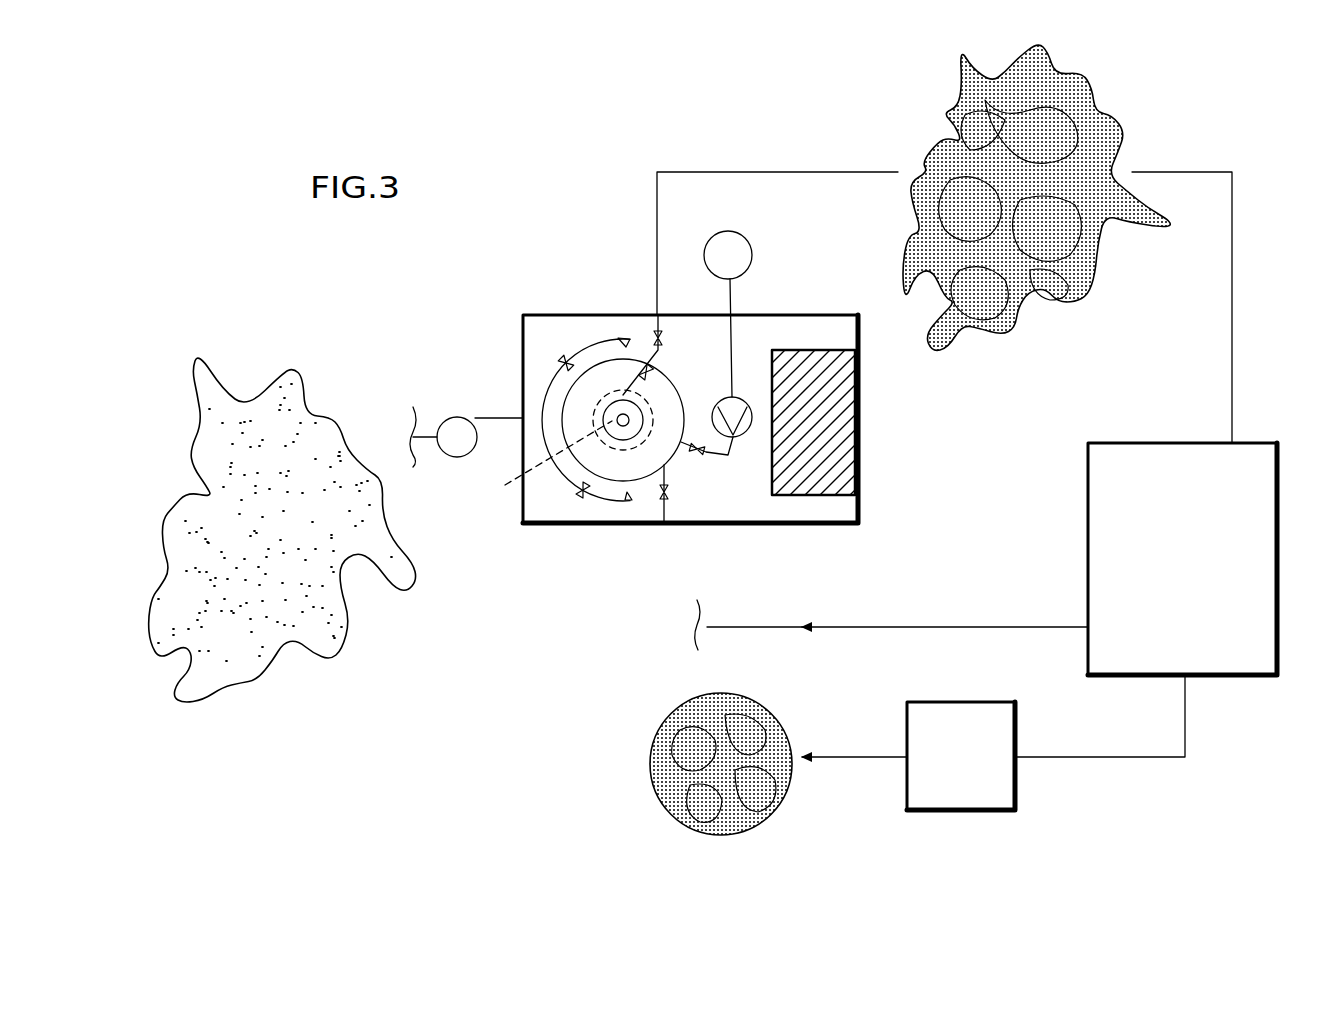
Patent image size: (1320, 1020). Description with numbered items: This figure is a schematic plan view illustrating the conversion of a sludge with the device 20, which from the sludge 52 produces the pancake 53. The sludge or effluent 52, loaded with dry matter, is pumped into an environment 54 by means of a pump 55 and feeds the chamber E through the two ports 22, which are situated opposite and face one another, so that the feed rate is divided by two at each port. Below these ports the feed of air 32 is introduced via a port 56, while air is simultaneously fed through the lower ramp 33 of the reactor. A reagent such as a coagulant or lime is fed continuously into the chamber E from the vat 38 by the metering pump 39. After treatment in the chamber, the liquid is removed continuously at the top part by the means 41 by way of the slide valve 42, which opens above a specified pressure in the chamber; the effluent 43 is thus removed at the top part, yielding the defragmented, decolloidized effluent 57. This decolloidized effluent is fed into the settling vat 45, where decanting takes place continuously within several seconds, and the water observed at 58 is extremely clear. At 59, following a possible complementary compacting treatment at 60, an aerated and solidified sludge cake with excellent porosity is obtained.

The device 20 is at (797, 152).
The ports 22 is at (606, 337).
The feed of air 32 is at (667, 527).
The lower ramp 33 is at (544, 460).
The vat 38 is at (752, 262).
The metering pump 39 is at (740, 397).
The means for removing liquid 41 is at (672, 360).
The slide valve 42 is at (655, 387).
The effluent 43 is at (688, 172).
The settling vat 45 is at (1088, 497).
The sludge 52 is at (268, 627).
The pancake 53 is at (755, 828).
The environment 54 is at (407, 422).
The pump 55 is at (462, 418).
The port 56 is at (660, 477).
The decolloidized effluent 57 is at (1108, 113).
The water 58 is at (915, 627).
The sludge cake output 59 is at (888, 798).
The complementary compacting treatment 60 is at (1015, 735).
The chamber E is at (626, 385).